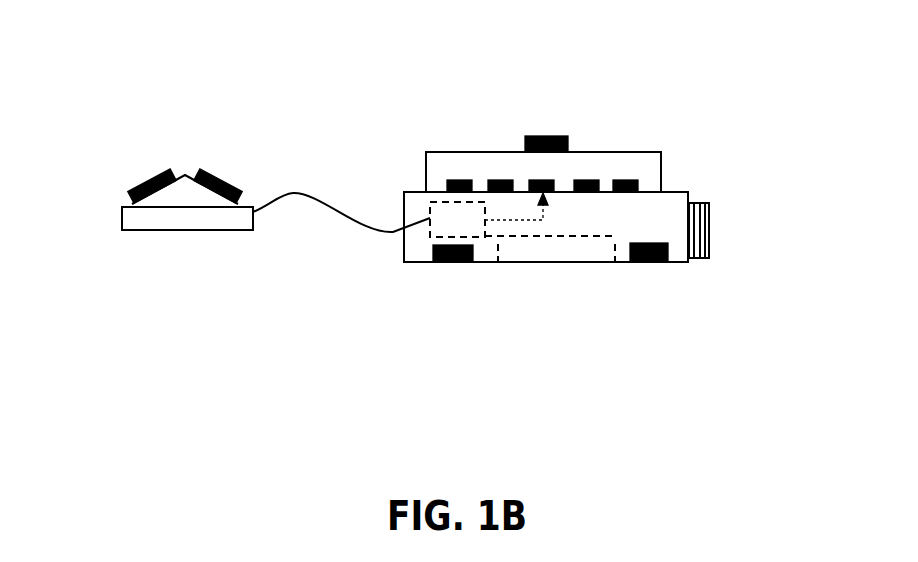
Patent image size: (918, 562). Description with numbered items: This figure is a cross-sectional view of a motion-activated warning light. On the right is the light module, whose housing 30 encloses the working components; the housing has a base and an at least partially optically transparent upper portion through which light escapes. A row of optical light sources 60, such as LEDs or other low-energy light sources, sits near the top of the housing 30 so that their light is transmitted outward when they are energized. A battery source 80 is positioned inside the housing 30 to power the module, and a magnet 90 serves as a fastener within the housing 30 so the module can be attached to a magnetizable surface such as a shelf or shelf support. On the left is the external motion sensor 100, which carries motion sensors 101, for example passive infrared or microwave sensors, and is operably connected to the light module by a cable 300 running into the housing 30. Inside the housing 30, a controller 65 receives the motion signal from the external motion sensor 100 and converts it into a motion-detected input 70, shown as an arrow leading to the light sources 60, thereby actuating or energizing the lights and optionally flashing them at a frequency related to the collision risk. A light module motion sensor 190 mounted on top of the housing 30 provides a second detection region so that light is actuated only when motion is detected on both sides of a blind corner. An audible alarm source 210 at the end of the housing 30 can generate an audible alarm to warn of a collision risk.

The housing 30 is at (713, 152).
The optical light sources 60 is at (627, 178).
The controller 65 is at (432, 208).
The motion-detected input 70 is at (515, 223).
The battery source 80 is at (588, 251).
The magnet 90 is at (650, 263).
The external motion sensor 100 is at (178, 220).
The motion sensors 101 is at (140, 180).
The light module motion sensor 190 is at (568, 137).
The audible alarm source 210 is at (698, 258).
The cable 300 is at (290, 193).